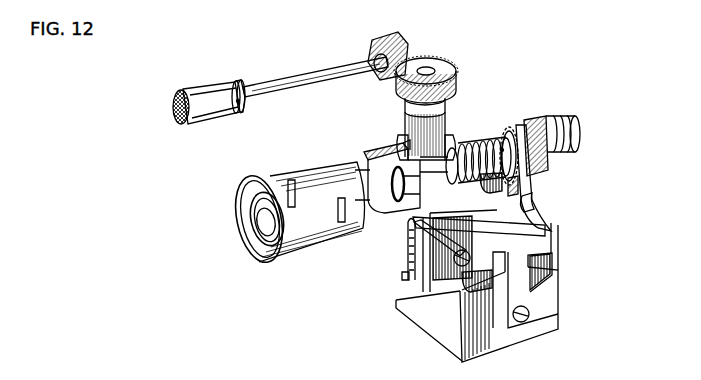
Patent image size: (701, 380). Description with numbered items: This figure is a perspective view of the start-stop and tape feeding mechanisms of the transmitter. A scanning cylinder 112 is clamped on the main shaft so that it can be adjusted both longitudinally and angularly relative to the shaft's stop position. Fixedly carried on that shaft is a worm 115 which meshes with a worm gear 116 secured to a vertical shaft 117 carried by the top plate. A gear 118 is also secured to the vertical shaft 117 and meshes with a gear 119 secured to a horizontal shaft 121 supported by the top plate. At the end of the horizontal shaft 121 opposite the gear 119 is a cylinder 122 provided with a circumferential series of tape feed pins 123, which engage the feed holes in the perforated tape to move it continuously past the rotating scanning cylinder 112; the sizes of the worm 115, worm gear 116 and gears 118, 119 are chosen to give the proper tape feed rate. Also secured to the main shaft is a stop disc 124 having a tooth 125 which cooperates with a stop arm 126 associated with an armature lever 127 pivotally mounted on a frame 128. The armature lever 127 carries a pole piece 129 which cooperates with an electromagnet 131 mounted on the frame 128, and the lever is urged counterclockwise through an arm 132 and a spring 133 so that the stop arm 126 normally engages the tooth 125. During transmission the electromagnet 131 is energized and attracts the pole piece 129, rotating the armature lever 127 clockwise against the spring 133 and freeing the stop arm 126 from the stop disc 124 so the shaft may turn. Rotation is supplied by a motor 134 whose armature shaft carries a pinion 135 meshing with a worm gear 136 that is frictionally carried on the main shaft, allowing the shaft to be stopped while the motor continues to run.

The scanning cylinder 112 is at (300, 247).
The worm 115 is at (482, 140).
The worm gear 116 is at (466, 126).
The vertical shaft 117 is at (431, 71).
The gear 118 is at (457, 84).
The gear 119 is at (403, 57).
The horizontal shaft 121 is at (290, 80).
The cylinder 122 is at (193, 88).
The tape feed pins 123 is at (237, 84).
The stop disc 124 is at (524, 118).
The tooth 125 is at (578, 137).
The stop arm 126 is at (528, 180).
The armature lever 127 is at (546, 224).
The frame 128 is at (440, 322).
The pole piece 129 is at (553, 316).
The electromagnet 131 is at (410, 317).
The arm 132 is at (407, 248).
The spring 133 is at (406, 276).
The motor 134 is at (408, 224).
The pinion 135 is at (535, 204).
The worm gear 136 is at (537, 163).